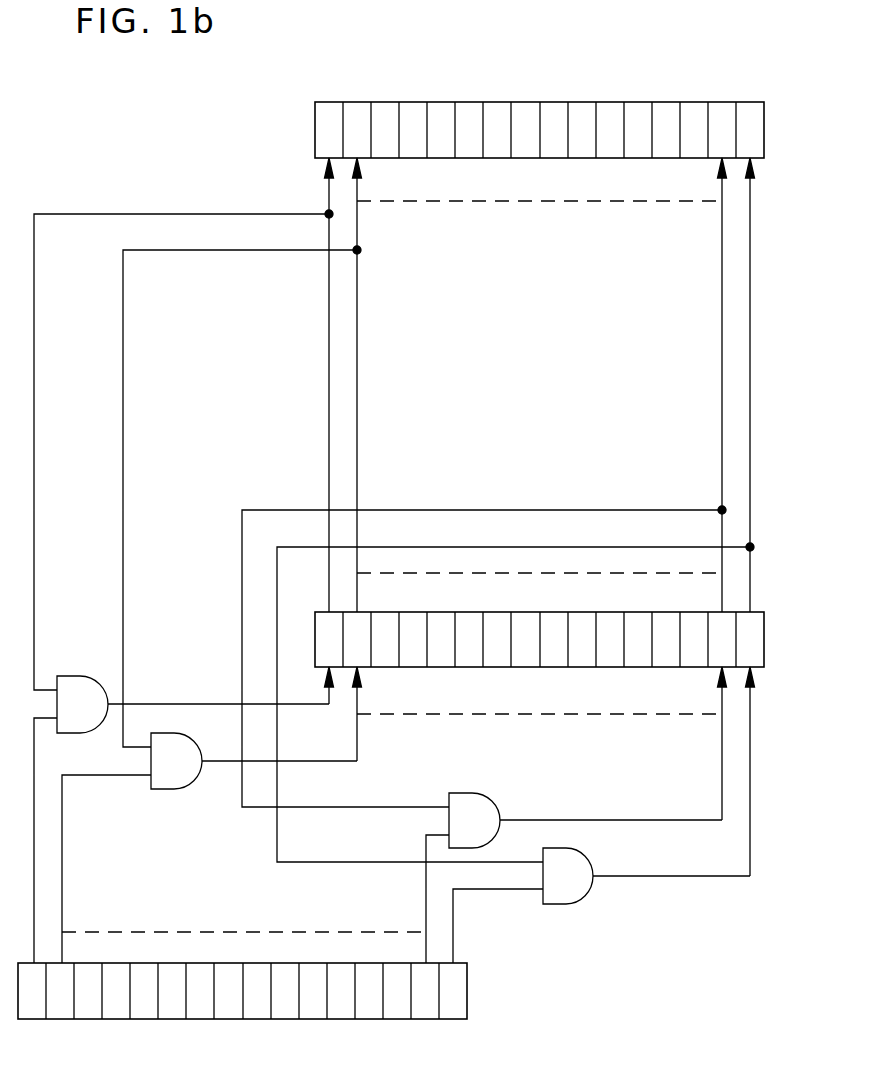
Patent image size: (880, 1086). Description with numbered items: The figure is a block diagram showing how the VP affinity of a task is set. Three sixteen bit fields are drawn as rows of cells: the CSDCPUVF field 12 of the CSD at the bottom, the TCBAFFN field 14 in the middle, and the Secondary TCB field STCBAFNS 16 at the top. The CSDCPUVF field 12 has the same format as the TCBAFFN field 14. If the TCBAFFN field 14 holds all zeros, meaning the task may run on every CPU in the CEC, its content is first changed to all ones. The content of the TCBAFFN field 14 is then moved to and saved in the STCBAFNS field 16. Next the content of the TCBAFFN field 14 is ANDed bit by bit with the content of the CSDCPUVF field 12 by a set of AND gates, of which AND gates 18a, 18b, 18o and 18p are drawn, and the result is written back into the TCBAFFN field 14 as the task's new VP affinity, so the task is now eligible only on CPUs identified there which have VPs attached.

The STCBAFNS field 16 is at (315, 131).
The TCBAFFN field 14 is at (315, 640).
The CSDCPUVF field 12 is at (467, 990).
The AND gate 18a is at (78, 678).
The AND gate 18b is at (175, 789).
The AND gate 18o is at (470, 793).
The AND gate 18p is at (567, 848).